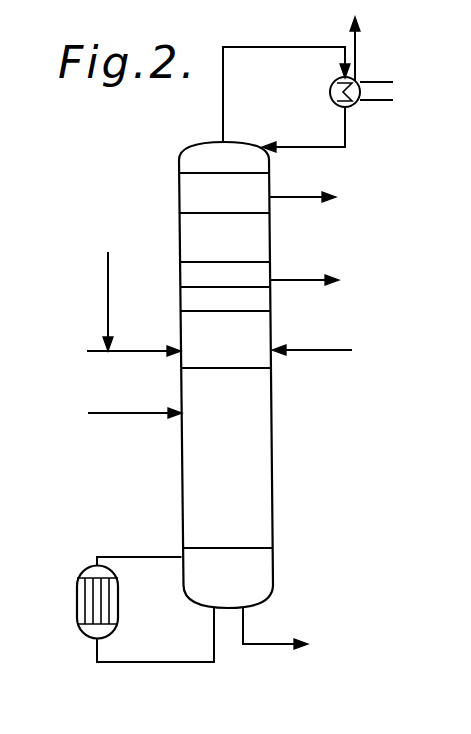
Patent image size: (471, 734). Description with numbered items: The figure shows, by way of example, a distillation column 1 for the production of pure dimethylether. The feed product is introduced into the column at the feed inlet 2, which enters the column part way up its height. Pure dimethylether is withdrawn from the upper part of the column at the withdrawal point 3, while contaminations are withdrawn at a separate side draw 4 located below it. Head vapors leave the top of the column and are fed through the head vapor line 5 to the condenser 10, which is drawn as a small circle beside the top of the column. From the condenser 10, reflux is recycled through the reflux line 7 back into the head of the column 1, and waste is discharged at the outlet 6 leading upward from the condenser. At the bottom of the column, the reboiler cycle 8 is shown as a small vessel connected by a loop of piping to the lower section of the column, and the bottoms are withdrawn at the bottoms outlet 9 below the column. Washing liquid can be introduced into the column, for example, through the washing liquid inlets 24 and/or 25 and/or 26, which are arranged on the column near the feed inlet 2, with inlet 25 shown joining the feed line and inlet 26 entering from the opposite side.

The distillation column 1 is at (236, 466).
The feed product inlet 2 is at (134, 337).
The pure dimethylether withdrawal 3 is at (302, 184).
The contaminations withdrawal 4 is at (312, 273).
The head vapor line 5 is at (286, 78).
The waste discharge 6 is at (370, 46).
The reflux line 7 is at (303, 129).
The reboiler cycle 8 is at (145, 609).
The bottoms withdrawal 9 is at (275, 646).
The condenser 10 is at (320, 100).
The washing liquid inlet 24 is at (160, 408).
The washing liquid inlet 25 is at (127, 301).
The washing liquid inlet 26 is at (312, 337).